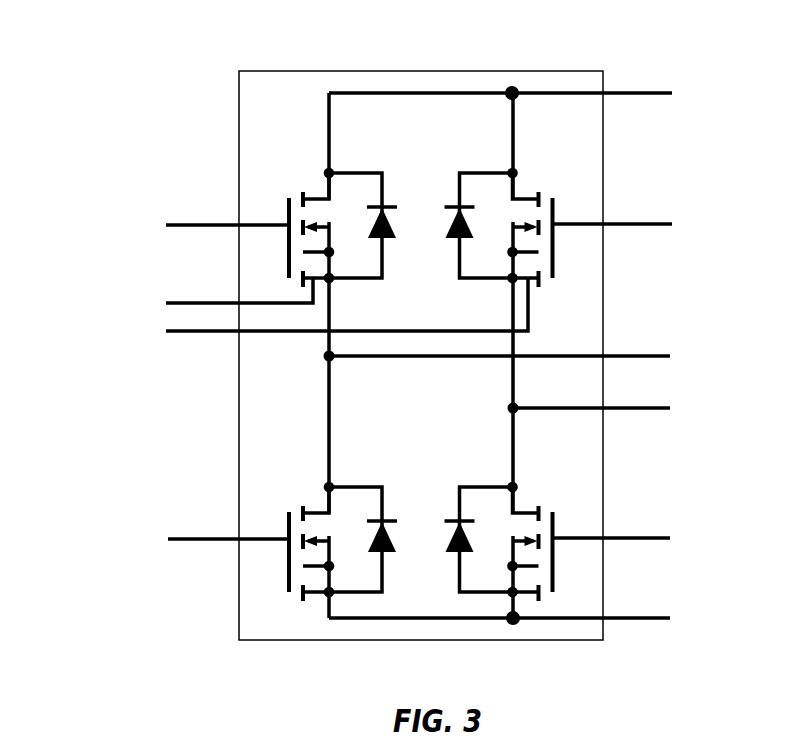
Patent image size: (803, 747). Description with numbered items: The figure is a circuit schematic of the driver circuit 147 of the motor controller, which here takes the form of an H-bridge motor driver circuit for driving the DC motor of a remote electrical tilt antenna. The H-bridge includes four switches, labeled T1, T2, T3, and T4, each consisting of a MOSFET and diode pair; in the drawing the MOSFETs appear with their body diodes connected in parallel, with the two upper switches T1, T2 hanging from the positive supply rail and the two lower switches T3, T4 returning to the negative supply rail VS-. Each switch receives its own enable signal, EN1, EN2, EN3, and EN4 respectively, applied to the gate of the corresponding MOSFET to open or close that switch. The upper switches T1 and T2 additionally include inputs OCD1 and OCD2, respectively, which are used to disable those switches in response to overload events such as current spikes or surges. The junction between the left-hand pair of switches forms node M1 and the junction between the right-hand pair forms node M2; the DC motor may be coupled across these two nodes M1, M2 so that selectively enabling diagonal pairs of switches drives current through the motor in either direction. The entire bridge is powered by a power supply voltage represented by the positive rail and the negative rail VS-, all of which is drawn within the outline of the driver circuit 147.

The driver circuit 147 is at (126, 46).
The switch T1 is at (343, 207).
The switch T2 is at (499, 207).
The switch T3 is at (343, 521).
The switch T4 is at (499, 521).
The enable signal EN1 is at (199, 229).
The enable signal EN2 is at (637, 226).
The enable signal EN3 is at (201, 543).
The enable signal EN4 is at (637, 539).
The additional input OCD1 is at (204, 298).
The additional input OCD2 is at (311, 315).
The node M1 is at (518, 358).
The node M2 is at (610, 411).
The power supply voltage VS- is at (522, 621).